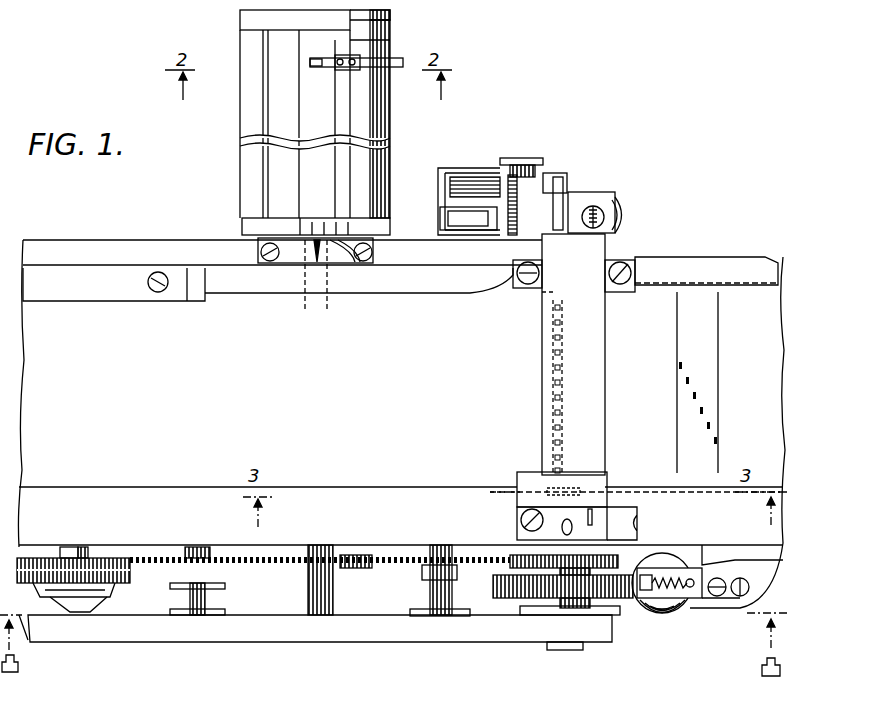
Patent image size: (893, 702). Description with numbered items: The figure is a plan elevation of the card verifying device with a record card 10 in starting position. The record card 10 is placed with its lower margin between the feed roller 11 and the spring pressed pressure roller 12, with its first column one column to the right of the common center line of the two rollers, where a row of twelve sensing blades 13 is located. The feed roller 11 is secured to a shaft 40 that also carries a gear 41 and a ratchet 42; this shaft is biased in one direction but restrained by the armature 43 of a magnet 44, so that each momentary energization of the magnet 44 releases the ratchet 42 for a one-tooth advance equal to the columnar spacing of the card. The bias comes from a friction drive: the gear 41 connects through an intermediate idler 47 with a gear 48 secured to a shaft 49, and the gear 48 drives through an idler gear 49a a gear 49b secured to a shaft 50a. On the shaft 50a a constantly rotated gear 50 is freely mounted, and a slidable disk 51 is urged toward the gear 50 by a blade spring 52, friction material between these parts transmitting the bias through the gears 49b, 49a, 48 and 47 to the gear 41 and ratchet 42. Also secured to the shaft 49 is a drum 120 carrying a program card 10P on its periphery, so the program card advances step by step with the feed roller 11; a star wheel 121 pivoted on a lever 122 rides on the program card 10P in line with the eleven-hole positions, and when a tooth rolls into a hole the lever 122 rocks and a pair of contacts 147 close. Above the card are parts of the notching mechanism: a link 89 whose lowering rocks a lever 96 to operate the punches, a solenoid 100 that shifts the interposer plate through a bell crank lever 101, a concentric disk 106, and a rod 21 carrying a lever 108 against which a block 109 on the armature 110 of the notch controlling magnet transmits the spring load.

The record card 10 is at (698, 297).
The program card 10P is at (325, 106).
The feed roller 11 is at (520, 491).
The spring pressed pressure roller 12 is at (548, 486).
The sensing blades 13 is at (552, 392).
The rod 21 is at (516, 230).
The shaft 40 is at (565, 650).
The gear 41 is at (512, 560).
The ratchet 42 is at (520, 598).
The armature 43 is at (637, 592).
The magnet 44 is at (668, 612).
The intermediate idler 47 is at (400, 560).
The gear 48 is at (345, 560).
The shaft 49 is at (333, 605).
The idler gear 49a is at (165, 562).
The gear 49b is at (108, 560).
The gear 50 is at (125, 583).
The shaft 50a is at (63, 553).
The disk 51 is at (110, 597).
The blade spring 52 is at (107, 592).
The link 89 is at (548, 178).
The lever 96 is at (562, 186).
The solenoid 100 is at (622, 228).
The bell crank lever 101 is at (600, 213).
The concentric disk 106 is at (510, 185).
The lever 108 is at (456, 178).
The block 109 is at (440, 170).
The armature 110 is at (440, 218).
The drum 120 is at (275, 87).
The star wheel 121 is at (322, 65).
The lever 122 is at (330, 60).
The contacts 147 is at (400, 60).